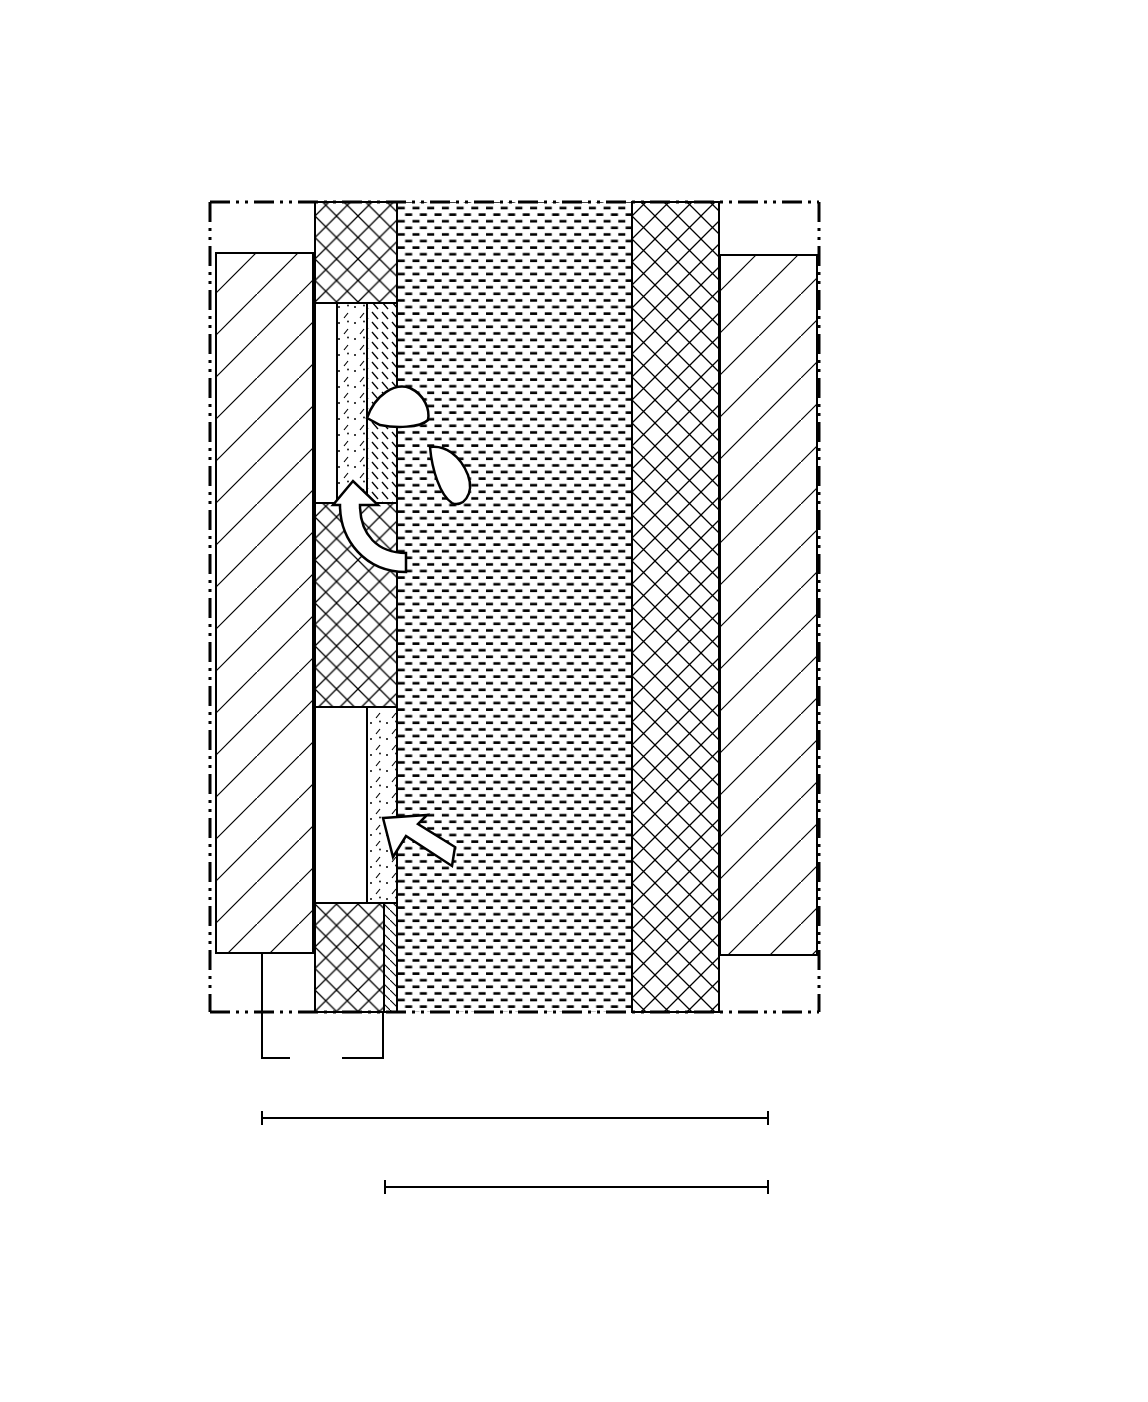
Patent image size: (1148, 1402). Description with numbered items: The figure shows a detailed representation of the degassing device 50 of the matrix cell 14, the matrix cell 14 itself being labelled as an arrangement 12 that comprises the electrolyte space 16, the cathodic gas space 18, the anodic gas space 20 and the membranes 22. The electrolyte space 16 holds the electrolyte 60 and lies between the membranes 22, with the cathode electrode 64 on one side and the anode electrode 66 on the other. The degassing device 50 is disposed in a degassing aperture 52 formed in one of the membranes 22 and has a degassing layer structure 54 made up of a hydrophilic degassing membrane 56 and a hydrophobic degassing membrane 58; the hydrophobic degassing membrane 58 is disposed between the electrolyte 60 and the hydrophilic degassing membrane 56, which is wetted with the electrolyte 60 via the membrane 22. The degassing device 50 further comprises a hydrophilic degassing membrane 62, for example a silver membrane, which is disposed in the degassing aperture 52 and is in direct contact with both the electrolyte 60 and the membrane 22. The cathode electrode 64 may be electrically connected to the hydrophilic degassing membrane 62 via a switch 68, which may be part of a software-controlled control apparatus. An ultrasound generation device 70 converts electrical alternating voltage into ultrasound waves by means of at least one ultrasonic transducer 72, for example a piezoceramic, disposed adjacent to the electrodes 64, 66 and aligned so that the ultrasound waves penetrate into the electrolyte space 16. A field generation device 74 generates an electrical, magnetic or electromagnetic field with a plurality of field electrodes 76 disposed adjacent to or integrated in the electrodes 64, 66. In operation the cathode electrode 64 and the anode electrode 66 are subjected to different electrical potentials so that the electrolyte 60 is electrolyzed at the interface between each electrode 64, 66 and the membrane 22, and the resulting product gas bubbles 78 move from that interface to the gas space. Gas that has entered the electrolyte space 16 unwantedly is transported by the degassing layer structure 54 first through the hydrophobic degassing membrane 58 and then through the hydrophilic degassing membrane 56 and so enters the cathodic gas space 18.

The energy storage cell 12 is at (326, 105).
The matrix cell 14 is at (595, 160).
The electrolyte space 16 is at (462, 216).
The cathodic gas space 18 is at (320, 405).
The anodic gas space 20 is at (832, 118).
The membranes 22 is at (355, 222).
The degassing device 50 is at (285, 220).
The degassing aperture 52 is at (322, 335).
The degassing layer structure 54 is at (318, 437).
The hydrophilic degassing membrane 56 is at (340, 318).
The hydrophobic degassing membrane 58 is at (378, 316).
The electrolyte 60 is at (525, 982).
The hydrophilic degassing membrane 62 is at (330, 847).
The cathode electrode 64 is at (240, 585).
The anode electrode 66 is at (800, 582).
The switch 68 is at (337, 1036).
The ultrasound generation device 70 is at (848, 240).
The ultrasonic transducer 72 is at (233, 220).
The field generation device 74 is at (850, 382).
The field electrode 76 is at (233, 540).
The product gas bubbles 78 is at (445, 458).